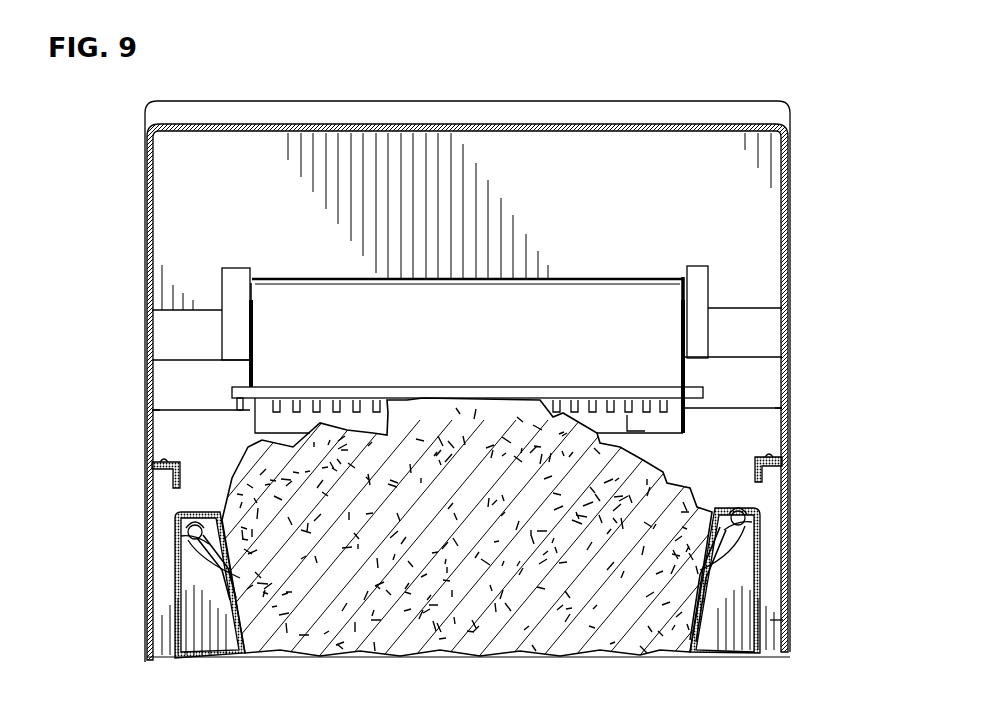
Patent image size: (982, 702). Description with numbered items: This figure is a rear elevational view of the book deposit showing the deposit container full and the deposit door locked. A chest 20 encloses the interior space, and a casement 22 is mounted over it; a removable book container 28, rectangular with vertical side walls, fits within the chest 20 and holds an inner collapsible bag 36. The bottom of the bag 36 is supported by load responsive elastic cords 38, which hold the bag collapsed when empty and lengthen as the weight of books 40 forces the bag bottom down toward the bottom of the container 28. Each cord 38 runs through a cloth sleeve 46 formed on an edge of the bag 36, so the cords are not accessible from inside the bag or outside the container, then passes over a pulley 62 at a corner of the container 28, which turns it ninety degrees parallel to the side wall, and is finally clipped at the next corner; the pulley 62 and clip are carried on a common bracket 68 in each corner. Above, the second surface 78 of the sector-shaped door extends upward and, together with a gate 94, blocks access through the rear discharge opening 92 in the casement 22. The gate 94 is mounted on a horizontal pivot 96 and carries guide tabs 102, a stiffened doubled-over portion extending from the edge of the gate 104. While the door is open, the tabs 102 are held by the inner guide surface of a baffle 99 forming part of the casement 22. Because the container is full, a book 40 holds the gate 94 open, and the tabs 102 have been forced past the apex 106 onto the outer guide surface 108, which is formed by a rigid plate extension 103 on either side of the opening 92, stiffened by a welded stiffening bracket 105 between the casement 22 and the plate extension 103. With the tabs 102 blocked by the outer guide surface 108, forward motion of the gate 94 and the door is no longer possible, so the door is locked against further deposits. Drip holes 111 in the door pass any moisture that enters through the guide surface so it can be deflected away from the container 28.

The chest 20 is at (786, 494).
The casement 22 is at (792, 180).
The removable book container 28 is at (783, 620).
The collapsible bag 36 is at (773, 607).
The elastic cords 38 is at (222, 582).
The books 40 is at (480, 529).
The cloth sleeves 46 is at (232, 622).
The pulley 62 is at (180, 545).
The bracket 68 is at (185, 528).
The second surface 78 is at (636, 425).
The rear discharge opening 92 is at (252, 337).
The gate 94 is at (469, 378).
The horizontal pivot 96 is at (688, 278).
The baffle 99 is at (608, 278).
The guide tabs 102 is at (240, 408).
The rigid plate extension 103 is at (207, 357).
The edge of the gate 104 is at (565, 387).
The stiffening bracket 105 is at (222, 332).
The apex 106 is at (170, 412).
The outer guide surface 108 is at (467, 388).
The drip holes 111 is at (353, 400).